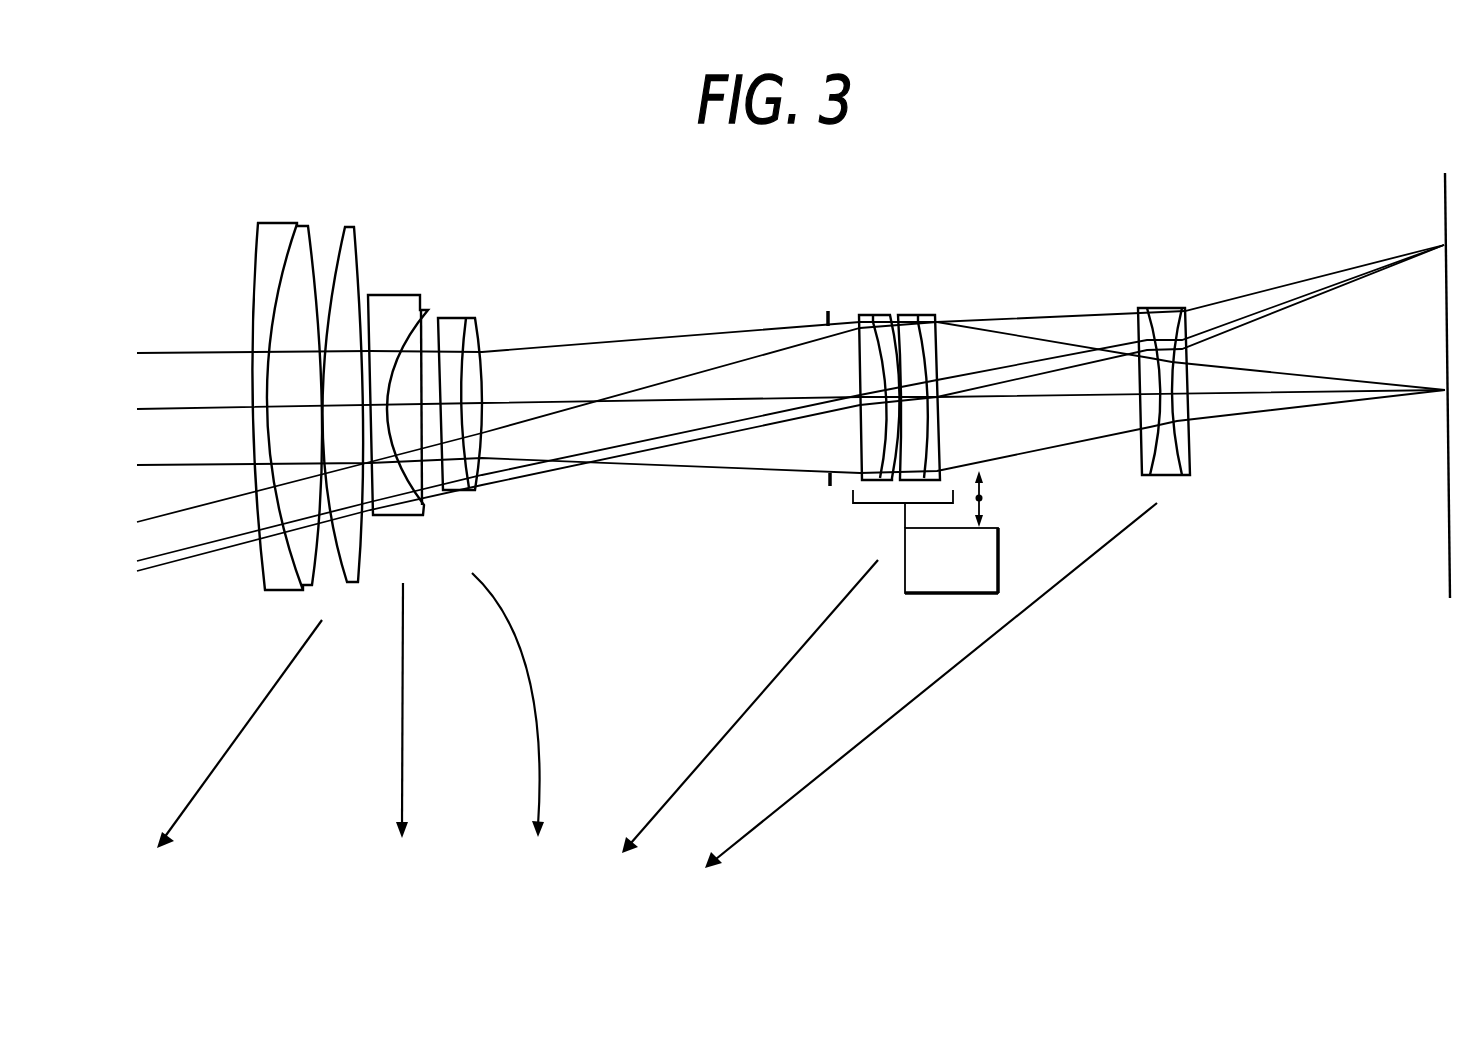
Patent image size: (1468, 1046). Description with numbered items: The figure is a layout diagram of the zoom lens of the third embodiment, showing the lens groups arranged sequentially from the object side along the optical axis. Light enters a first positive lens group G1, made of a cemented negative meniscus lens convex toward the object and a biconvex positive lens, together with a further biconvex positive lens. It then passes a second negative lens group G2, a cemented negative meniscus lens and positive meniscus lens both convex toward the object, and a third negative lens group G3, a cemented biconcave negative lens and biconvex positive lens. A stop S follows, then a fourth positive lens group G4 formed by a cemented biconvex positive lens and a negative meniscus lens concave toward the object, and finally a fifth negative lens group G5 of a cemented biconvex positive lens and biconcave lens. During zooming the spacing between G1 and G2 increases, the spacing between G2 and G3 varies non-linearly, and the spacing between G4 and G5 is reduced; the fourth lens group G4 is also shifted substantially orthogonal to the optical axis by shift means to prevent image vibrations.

The first positive lens group G1 is at (355, 217).
The second negative lens group G2 is at (428, 278).
The third negative lens group G3 is at (492, 280).
The fourth positive lens group G4 is at (943, 303).
The fifth negative lens group G5 is at (1192, 297).
The stop S is at (827, 310).